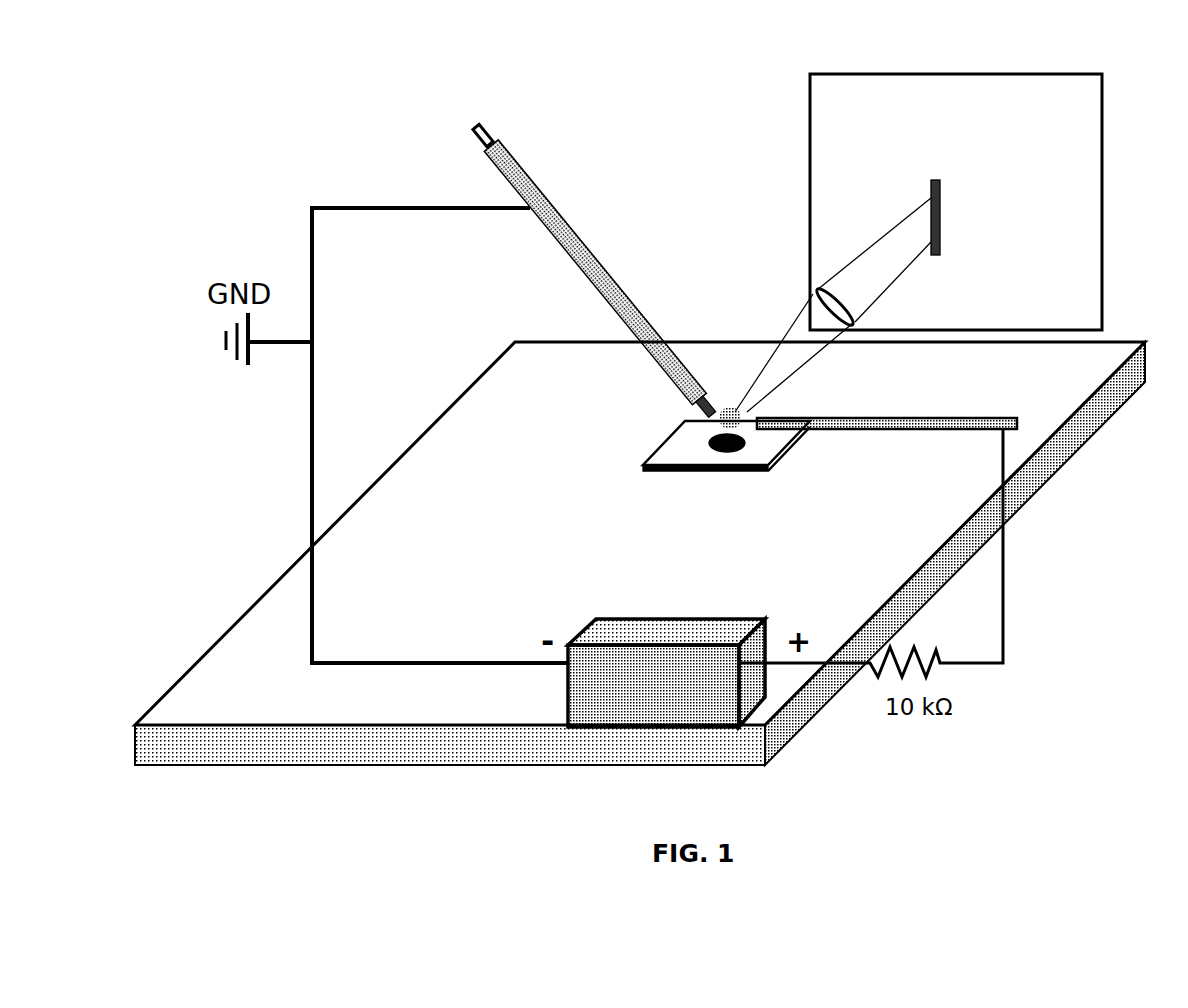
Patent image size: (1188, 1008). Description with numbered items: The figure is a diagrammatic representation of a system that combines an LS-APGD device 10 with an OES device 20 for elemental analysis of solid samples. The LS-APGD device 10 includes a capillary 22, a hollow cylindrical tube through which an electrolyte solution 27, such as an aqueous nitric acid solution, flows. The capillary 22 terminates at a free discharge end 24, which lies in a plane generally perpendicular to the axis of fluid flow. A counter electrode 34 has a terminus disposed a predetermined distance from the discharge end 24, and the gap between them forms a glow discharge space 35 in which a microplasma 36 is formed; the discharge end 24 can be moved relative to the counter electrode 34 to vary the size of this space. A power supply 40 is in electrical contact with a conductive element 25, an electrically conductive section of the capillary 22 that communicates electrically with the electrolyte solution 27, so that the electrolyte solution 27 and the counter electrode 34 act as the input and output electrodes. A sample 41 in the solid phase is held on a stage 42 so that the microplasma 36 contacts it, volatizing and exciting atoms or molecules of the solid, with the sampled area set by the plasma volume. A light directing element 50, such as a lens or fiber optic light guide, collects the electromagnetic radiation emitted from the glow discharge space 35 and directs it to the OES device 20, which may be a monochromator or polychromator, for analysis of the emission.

The LS-APGD device 10 is at (1056, 584).
The OES device 20 is at (1006, 139).
The capillary 22 is at (491, 130).
The discharge end 24 is at (705, 418).
The conductive element 25 is at (537, 195).
The electrolyte solution 27 is at (474, 124).
The counter electrode 34 is at (882, 418).
The glow discharge space 35 is at (770, 409).
The microplasma 36 is at (726, 410).
The power supply 40 is at (612, 633).
The sample 41 is at (722, 452).
The stage 42 is at (788, 455).
The light directing element 50 is at (812, 294).